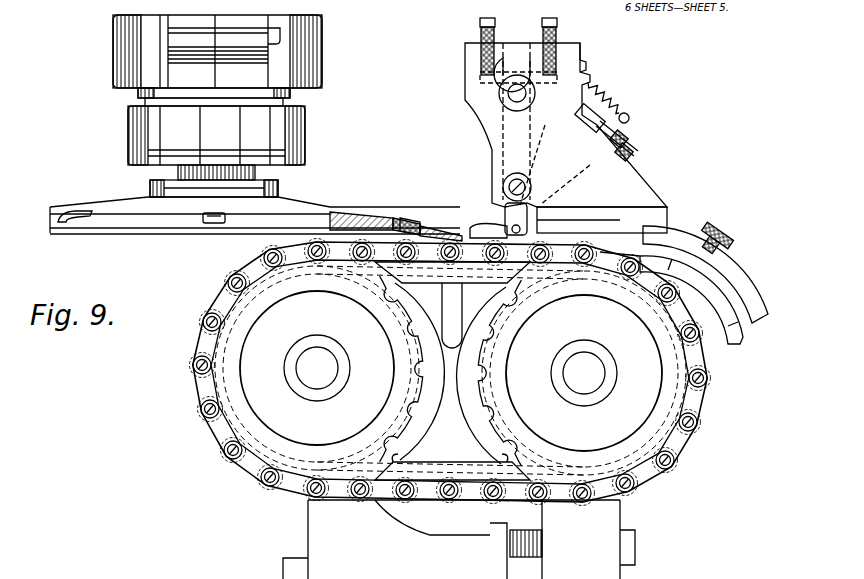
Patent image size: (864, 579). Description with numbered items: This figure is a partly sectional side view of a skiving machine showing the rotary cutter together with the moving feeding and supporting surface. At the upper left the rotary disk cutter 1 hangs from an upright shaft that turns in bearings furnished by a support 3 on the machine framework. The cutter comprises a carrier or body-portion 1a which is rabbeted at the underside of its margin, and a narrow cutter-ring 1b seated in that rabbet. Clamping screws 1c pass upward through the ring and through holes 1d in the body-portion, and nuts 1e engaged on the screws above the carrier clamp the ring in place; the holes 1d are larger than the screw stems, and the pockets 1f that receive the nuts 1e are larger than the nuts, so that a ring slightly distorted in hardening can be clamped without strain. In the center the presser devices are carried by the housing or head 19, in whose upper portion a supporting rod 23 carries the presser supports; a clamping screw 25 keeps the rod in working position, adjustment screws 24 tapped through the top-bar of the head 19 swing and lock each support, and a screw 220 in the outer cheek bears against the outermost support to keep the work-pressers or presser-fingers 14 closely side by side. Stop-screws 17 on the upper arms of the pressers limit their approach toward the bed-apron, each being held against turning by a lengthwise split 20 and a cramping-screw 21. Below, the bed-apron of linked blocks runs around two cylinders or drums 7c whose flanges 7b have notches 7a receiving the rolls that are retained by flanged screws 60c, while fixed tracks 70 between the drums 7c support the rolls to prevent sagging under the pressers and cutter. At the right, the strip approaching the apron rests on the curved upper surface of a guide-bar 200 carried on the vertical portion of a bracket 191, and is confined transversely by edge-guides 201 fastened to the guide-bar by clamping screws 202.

The rotary disk cutter 1 is at (183, 233).
The carrier or body-portion 1a is at (338, 212).
The cutter-ring 1b is at (443, 228).
The clamping screws 1c is at (405, 222).
The holes 1d is at (421, 222).
The nuts 1e is at (203, 217).
The pockets 1f is at (224, 217).
The support 3 is at (113, 50).
The notches 7a is at (393, 452).
The flanges 7b is at (432, 350).
The cylinders or drums 7c is at (257, 375).
The work-pressers or presser-fingers 14 is at (490, 228).
The stop-screws 17 is at (630, 156).
The housing or head 19 is at (492, 138).
The split 20 is at (630, 125).
The cramping-screw 21 is at (628, 138).
The supporting rod 23 is at (515, 95).
The adjustment screws 24 is at (480, 21).
The clamping screw 25 is at (503, 75).
The flanged screws 60c is at (664, 472).
The fixed tracks 70 is at (403, 279).
The bracket 191 is at (603, 242).
The guide-bar 200 is at (737, 336).
The edge-guides 201 is at (750, 280).
The clamping screws 202 is at (728, 233).
The screw 220 is at (519, 178).